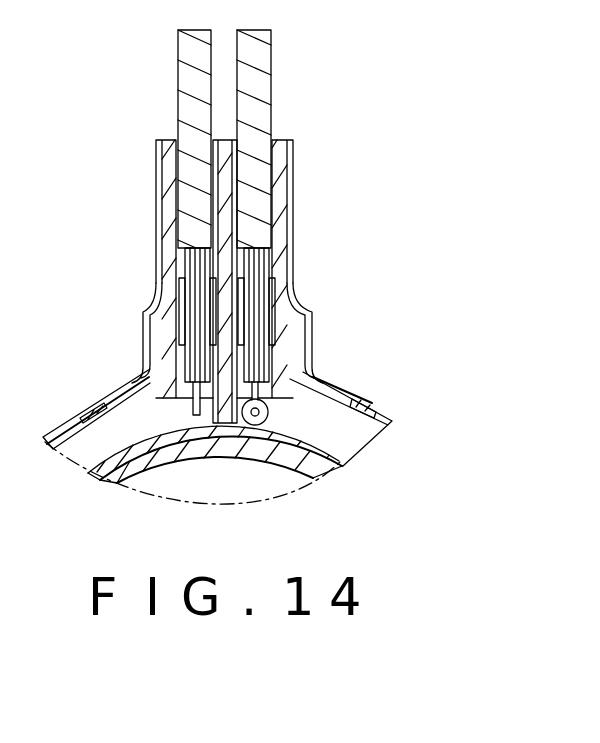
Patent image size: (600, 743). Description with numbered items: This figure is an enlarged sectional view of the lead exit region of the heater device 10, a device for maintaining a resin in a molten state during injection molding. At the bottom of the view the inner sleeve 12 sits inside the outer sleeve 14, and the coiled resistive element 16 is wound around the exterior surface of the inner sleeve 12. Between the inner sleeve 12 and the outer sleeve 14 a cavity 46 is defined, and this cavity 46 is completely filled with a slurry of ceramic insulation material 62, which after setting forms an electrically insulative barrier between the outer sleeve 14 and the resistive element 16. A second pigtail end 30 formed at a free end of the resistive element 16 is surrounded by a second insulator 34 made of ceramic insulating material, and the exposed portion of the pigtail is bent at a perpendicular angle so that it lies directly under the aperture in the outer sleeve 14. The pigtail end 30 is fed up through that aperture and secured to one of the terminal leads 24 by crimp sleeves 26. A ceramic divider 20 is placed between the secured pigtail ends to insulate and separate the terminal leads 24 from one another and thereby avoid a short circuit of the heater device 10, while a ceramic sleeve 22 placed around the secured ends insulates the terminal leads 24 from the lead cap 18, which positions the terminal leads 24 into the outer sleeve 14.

The heater device 10 is at (342, 207).
The inner sleeve 12 is at (204, 458).
The outer sleeve 14 is at (80, 411).
The coiled resistive element 16 is at (352, 452).
The lead cap 18 is at (310, 302).
The ceramic divider 20 is at (222, 173).
The ceramic sleeve 22 is at (173, 206).
The terminal leads 24 is at (177, 77).
The crimp sleeves 26 is at (277, 293).
The second pigtail end 30 is at (257, 392).
The second insulator 34 is at (268, 418).
The cavity 46 is at (350, 433).
The ceramic insulation material 62 is at (100, 445).